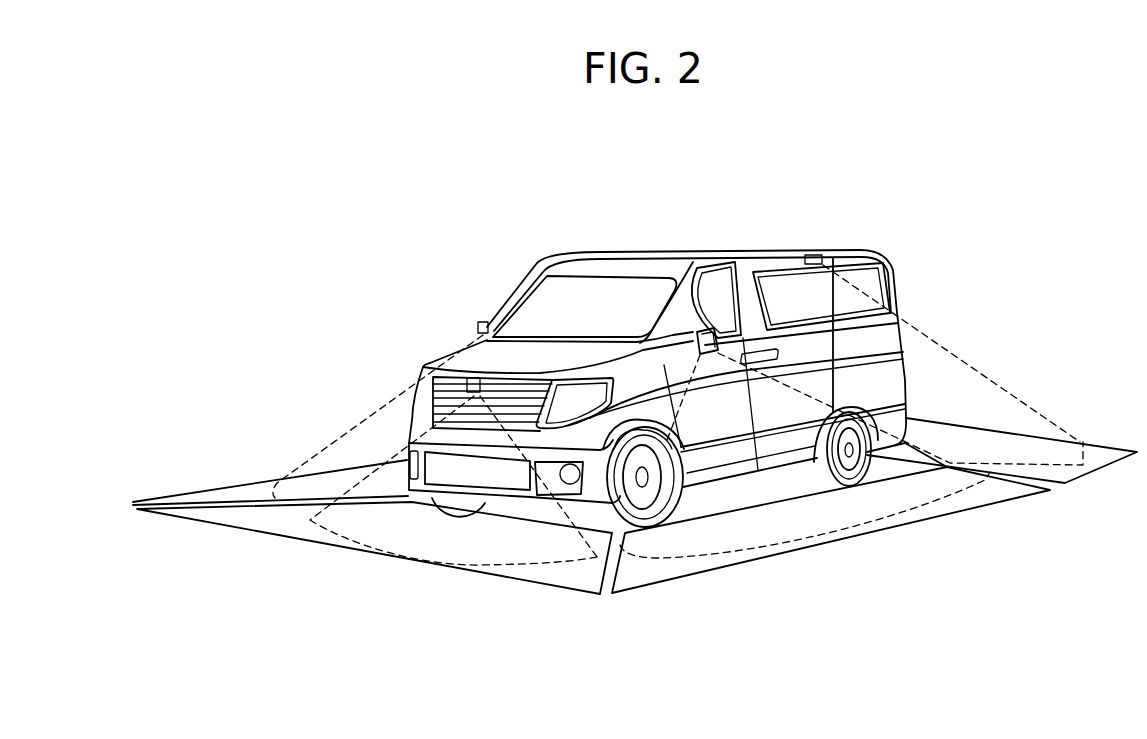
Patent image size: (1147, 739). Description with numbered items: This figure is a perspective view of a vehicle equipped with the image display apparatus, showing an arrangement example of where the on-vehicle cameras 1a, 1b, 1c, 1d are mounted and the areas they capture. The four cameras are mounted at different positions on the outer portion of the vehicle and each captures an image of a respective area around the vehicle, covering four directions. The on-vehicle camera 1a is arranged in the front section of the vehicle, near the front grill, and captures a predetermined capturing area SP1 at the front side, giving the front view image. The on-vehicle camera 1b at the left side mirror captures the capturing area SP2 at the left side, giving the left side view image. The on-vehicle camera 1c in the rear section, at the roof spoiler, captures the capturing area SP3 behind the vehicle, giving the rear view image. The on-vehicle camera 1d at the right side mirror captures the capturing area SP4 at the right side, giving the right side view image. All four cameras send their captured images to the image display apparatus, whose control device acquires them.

The on-vehicle camera 1a is at (477, 387).
The on-vehicle camera 1b is at (713, 330).
The on-vehicle camera 1c is at (762, 252).
The on-vehicle camera 1d is at (487, 322).
The capturing area SP1 is at (273, 522).
The capturing area SP2 is at (648, 570).
The capturing area SP3 is at (1036, 452).
The capturing area SP4 is at (327, 488).